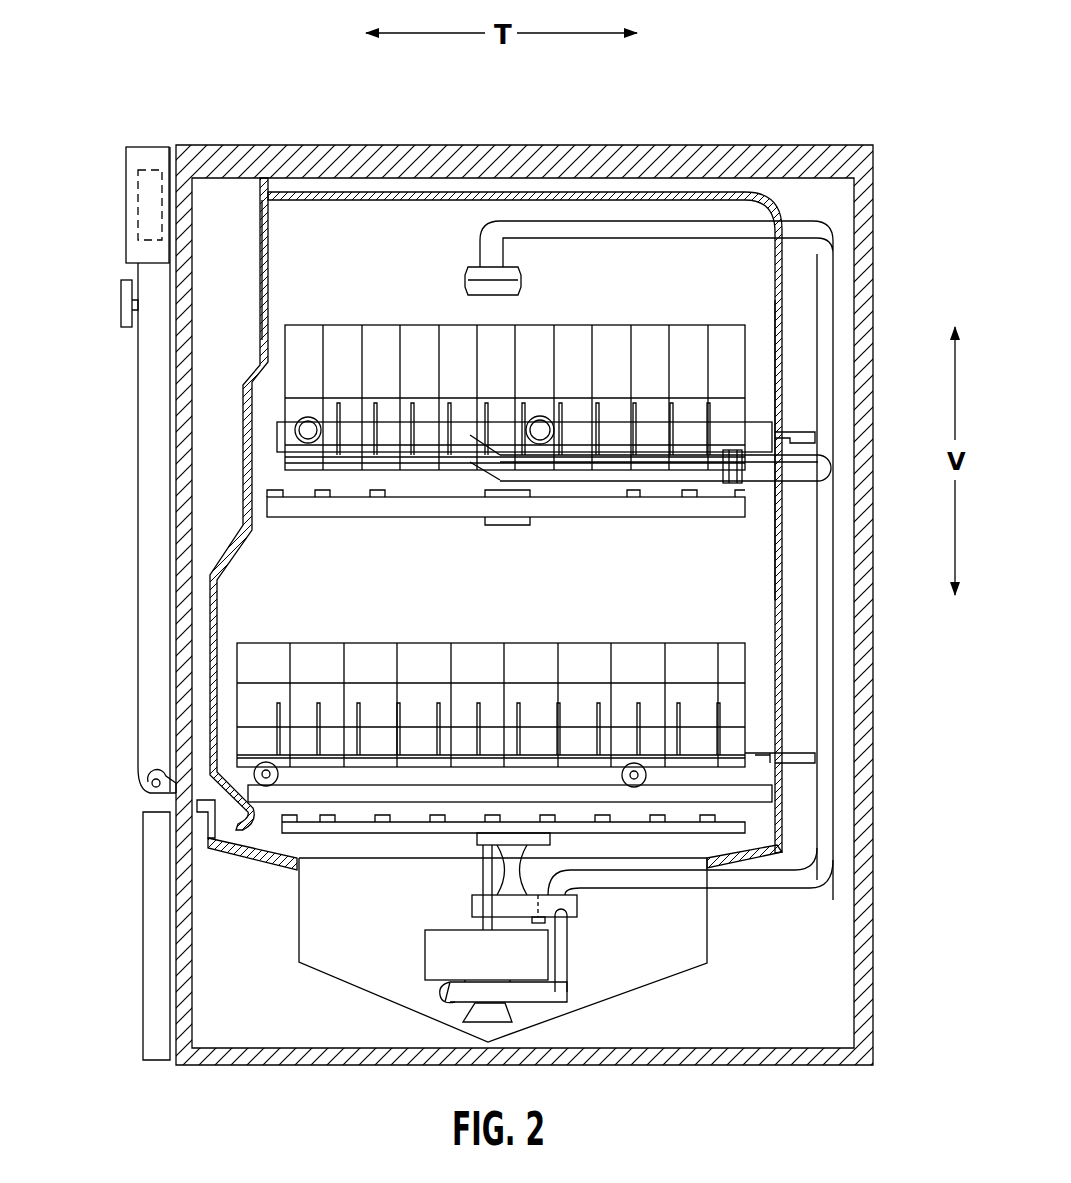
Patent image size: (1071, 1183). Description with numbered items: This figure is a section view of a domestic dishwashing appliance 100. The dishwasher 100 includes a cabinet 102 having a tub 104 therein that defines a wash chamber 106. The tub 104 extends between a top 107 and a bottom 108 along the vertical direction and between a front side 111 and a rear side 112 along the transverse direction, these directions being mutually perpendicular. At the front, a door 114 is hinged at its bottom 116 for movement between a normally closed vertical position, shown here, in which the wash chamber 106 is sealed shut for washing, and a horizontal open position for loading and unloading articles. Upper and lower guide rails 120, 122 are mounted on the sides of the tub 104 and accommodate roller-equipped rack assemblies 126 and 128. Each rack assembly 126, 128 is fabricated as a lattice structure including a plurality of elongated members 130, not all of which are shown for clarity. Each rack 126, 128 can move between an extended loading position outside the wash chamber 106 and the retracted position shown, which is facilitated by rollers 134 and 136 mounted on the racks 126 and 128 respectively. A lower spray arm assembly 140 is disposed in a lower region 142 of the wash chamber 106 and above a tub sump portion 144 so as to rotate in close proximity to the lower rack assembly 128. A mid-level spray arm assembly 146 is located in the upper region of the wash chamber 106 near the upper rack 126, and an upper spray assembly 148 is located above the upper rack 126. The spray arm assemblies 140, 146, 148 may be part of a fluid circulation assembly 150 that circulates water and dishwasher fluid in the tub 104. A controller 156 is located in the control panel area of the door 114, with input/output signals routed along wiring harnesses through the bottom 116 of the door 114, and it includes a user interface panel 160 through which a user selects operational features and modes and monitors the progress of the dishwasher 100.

The dishwashing appliance 100 is at (722, 102).
The cabinet 102 is at (874, 208).
The tub 104 is at (394, 596).
The wash chamber 106 is at (262, 590).
The top 107 is at (412, 203).
The bottom 108 is at (752, 845).
The front side 111 is at (284, 237).
The rear side 112 is at (770, 262).
The door 114 is at (138, 663).
The bottom of door 116 is at (150, 793).
The upper guide rail 120 is at (282, 442).
The lower guide rail 122 is at (235, 848).
The upper rack assembly 126 is at (445, 434).
The lower rack assembly 128 is at (635, 640).
The elongated members 130 is at (422, 642).
The rollers 134 is at (300, 452).
The rollers 136 is at (622, 772).
The lower spray arm assembly 140 is at (665, 830).
The lower region 142 is at (750, 778).
The tub sump portion 144 is at (299, 907).
The mid-level spray arm assembly 146 is at (548, 505).
The upper spray assembly 148 is at (517, 290).
The fluid circulation assembly 150 is at (840, 578).
The controller 156 is at (126, 187).
The user interface panel 160 is at (124, 302).